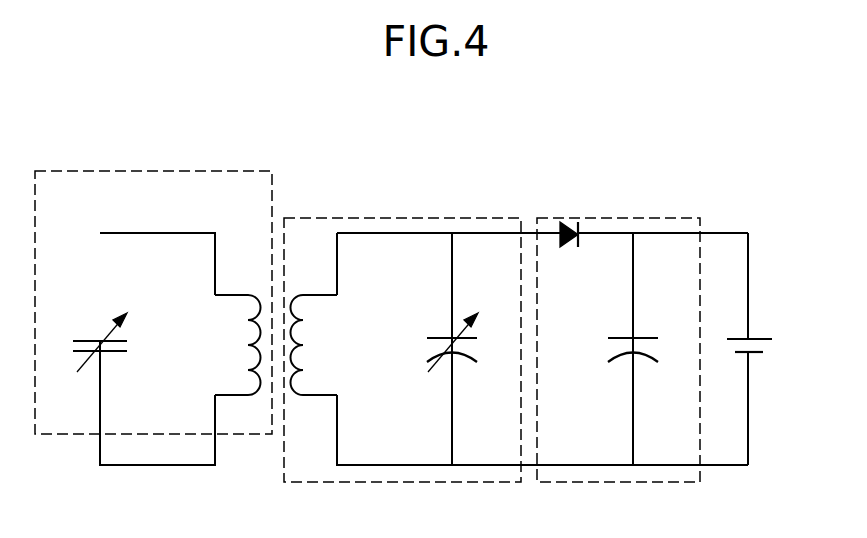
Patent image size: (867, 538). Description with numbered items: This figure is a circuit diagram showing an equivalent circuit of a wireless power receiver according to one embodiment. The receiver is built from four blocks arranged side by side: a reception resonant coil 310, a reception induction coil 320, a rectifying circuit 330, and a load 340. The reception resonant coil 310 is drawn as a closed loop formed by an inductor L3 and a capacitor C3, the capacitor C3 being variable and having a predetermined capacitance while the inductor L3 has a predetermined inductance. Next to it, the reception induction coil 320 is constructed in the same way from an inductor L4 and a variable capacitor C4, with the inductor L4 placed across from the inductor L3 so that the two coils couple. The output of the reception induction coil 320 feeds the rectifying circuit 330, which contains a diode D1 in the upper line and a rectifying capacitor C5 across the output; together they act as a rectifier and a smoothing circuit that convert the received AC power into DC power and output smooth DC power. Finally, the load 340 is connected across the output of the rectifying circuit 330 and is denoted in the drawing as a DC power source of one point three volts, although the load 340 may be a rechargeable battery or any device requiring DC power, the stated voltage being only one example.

The reception resonant coil 310 is at (183, 170).
The reception induction coil 320 is at (425, 216).
The rectifying circuit 330 is at (637, 216).
The load 340 is at (762, 336).
The capacitor C3 is at (86, 342).
The inductor L3 is at (238, 345).
The inductor L4 is at (317, 345).
The capacitor C4 is at (468, 342).
The rectifying capacitor C5 is at (649, 350).
The diode D1 is at (653, 215).